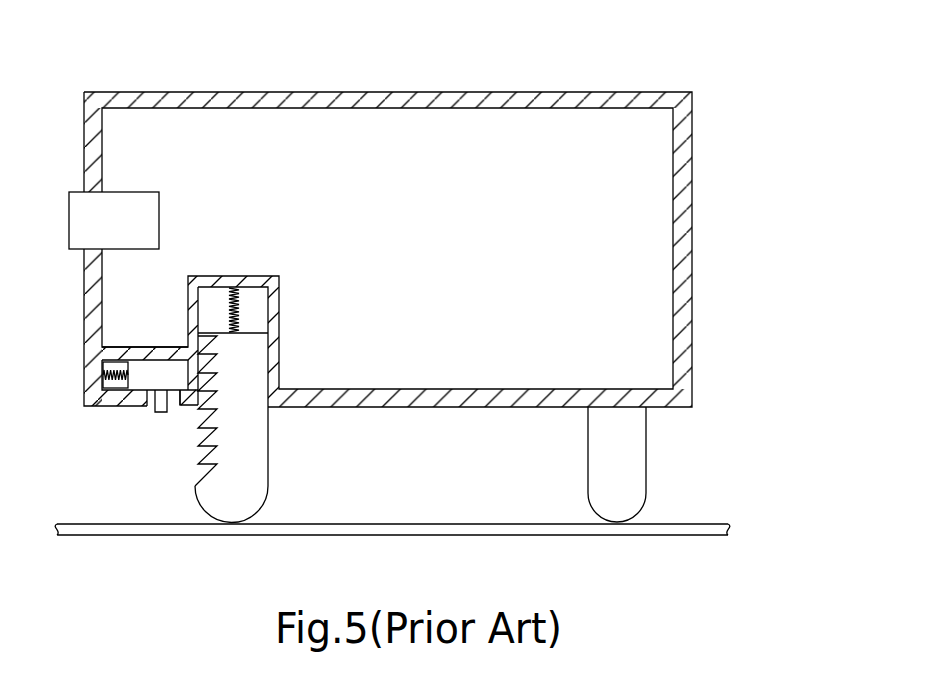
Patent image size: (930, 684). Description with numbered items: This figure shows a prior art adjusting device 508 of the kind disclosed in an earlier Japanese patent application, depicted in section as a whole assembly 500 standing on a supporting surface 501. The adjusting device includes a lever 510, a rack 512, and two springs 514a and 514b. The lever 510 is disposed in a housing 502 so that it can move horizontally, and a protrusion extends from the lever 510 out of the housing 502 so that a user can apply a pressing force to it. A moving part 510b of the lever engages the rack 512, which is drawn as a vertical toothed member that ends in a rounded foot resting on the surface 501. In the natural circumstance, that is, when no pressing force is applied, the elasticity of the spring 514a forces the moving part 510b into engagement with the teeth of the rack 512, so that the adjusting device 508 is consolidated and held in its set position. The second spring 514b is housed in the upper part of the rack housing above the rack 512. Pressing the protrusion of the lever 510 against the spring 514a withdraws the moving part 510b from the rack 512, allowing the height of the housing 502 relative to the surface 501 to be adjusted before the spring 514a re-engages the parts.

The prior art apparatus 500 is at (652, 42).
The mounting surface 501 is at (518, 530).
The housing 502 is at (450, 407).
The adjusting device 508 is at (232, 507).
The lever 510 is at (137, 377).
The moving part 510b is at (197, 388).
The rack 512 is at (269, 430).
The spring 514a is at (103, 376).
The spring 514b is at (238, 308).